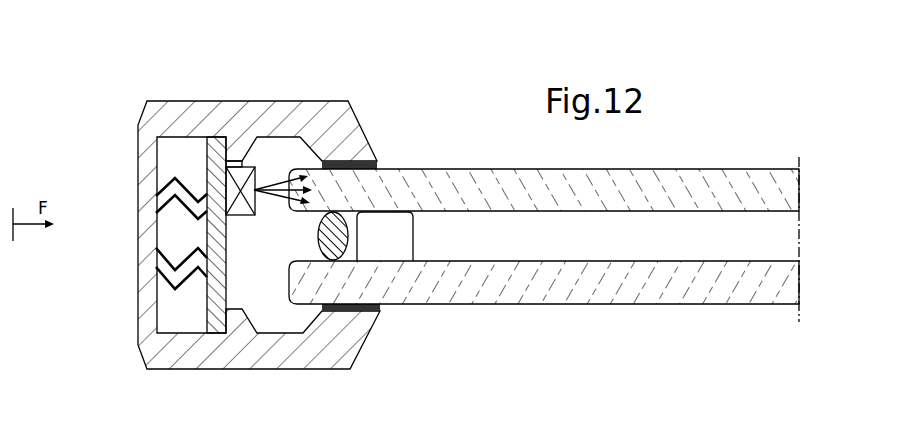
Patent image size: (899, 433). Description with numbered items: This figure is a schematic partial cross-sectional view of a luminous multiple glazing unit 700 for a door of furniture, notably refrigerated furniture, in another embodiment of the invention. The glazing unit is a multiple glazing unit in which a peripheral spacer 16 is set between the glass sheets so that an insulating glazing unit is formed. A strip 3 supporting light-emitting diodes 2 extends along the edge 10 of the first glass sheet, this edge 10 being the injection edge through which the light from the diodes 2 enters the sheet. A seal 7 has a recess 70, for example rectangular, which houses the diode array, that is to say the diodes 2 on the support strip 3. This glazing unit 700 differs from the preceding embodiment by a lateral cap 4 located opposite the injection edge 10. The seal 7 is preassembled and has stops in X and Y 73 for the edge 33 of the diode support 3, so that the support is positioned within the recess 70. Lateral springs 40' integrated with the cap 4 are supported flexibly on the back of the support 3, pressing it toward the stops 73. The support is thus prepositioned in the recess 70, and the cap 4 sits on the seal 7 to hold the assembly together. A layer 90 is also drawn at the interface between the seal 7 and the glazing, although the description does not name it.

The luminous multiple glazing unit 700 is at (178, 35).
The light-emitting diodes 2 is at (234, 161).
The strip supporting light-emitting diodes 3 is at (227, 253).
The lateral cap 4 is at (147, 313).
The seal 7 is at (290, 360).
The edge 10 is at (288, 172).
The peripheral spacer 16 is at (395, 236).
The edge of the diode support 33 is at (233, 326).
The lateral springs 40' is at (141, 198).
The recess 70 is at (173, 237).
The stops in X and Y 73 is at (207, 313).
The adhesive layer 90 is at (348, 159).